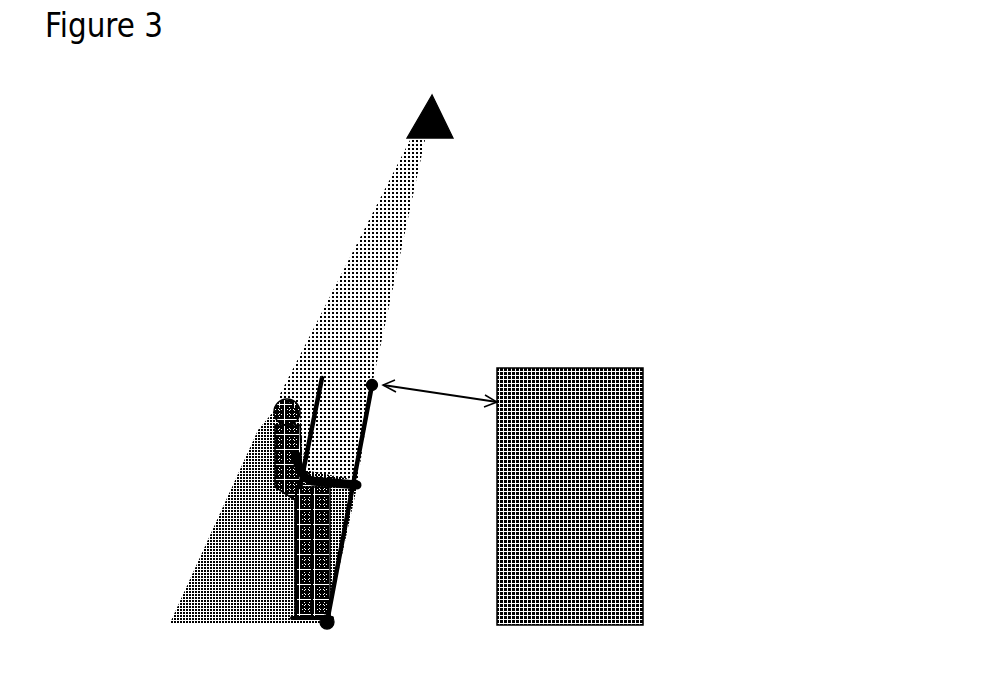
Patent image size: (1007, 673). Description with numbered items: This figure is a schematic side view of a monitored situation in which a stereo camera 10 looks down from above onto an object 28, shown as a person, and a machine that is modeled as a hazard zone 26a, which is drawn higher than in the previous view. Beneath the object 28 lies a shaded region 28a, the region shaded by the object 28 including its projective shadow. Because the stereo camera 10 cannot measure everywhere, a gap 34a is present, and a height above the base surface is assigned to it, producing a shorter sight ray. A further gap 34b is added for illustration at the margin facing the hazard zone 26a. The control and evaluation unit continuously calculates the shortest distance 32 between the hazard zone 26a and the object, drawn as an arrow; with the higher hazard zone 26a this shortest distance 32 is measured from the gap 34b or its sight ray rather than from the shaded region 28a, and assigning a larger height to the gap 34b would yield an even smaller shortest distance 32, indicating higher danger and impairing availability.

The stereo camera 10 is at (437, 110).
The hazard zone 26a is at (583, 452).
The object 28 is at (277, 490).
The shaded region 28a is at (212, 602).
The shortest distance 32 is at (458, 400).
The gap 34a is at (322, 378).
The further gap 34b is at (375, 383).